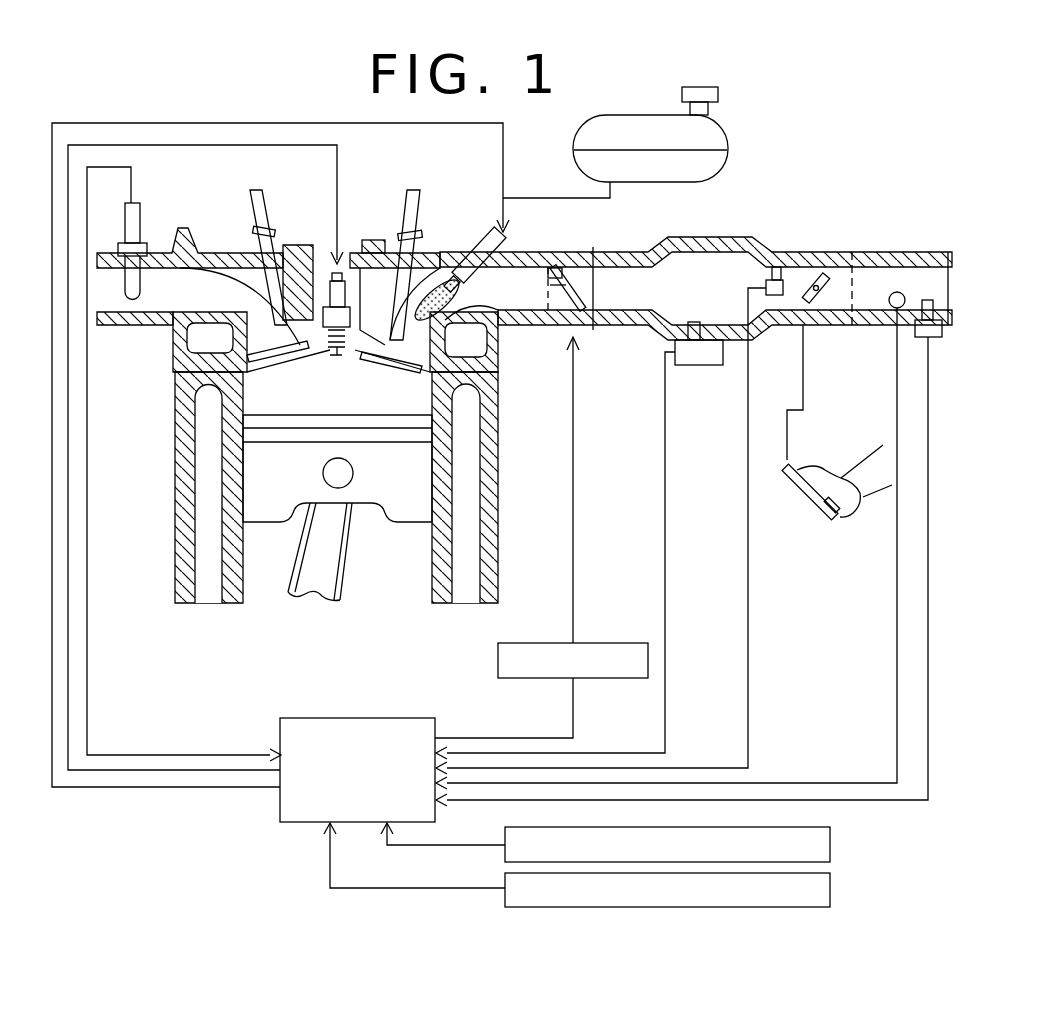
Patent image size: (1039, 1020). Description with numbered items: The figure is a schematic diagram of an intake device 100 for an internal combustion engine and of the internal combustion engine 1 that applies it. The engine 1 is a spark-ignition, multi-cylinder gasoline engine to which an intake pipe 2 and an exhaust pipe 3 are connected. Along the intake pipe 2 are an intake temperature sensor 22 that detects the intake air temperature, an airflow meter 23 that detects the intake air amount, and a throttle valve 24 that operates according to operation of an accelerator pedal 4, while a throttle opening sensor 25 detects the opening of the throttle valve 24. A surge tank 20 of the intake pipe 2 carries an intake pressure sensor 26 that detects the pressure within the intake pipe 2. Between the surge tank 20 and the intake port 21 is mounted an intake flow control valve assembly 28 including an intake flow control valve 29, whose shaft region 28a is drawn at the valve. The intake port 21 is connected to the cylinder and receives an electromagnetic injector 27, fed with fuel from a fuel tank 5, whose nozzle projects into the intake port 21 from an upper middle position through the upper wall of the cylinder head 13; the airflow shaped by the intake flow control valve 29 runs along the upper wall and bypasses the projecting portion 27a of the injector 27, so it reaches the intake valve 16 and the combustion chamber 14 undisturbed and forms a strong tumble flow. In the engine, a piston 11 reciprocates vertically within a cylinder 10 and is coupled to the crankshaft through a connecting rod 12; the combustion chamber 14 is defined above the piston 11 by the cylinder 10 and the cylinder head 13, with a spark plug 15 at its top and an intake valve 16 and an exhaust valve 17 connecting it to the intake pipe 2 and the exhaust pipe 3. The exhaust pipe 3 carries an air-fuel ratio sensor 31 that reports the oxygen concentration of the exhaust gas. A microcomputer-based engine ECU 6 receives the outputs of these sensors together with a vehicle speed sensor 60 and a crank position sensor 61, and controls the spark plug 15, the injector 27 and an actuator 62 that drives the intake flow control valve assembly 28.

The intake device 100 is at (902, 140).
The internal combustion engine 1 is at (508, 400).
The intake pipe 2 is at (690, 240).
The exhaust pipe 3 is at (118, 326).
The accelerator pedal 4 is at (793, 476).
The fuel tank 5 is at (575, 135).
The engine electronic control unit (ECU) 6 is at (392, 718).
The cylinder 10 is at (498, 500).
The piston 11 is at (375, 487).
The connecting rod 12 is at (350, 582).
The cylinder head 13 is at (362, 240).
The combustion chamber 14 is at (465, 414).
The spark plug 15 is at (334, 270).
The intake valve 16 is at (412, 190).
The exhaust valve 17 is at (262, 190).
The surge tank 20 is at (735, 238).
The intake port 21 is at (510, 320).
The intake temperature sensor 22 is at (942, 335).
The airflow meter 23 is at (899, 291).
The throttle valve 24 is at (822, 273).
The throttle opening sensor 25 is at (775, 267).
The intake pressure sensor 26 is at (698, 365).
The injector 27 is at (486, 240).
The projecting portion of the injector 27a is at (465, 288).
The intake flow control valve assembly 28 is at (585, 328).
The valve shaft 28a is at (553, 268).
The intake flow control valve 29 is at (580, 252).
The air-fuel ratio (A/F) sensor 31 is at (143, 218).
The vehicle speed sensor 60 is at (832, 848).
The crank position sensor 61 is at (832, 895).
The actuator 62 is at (535, 643).